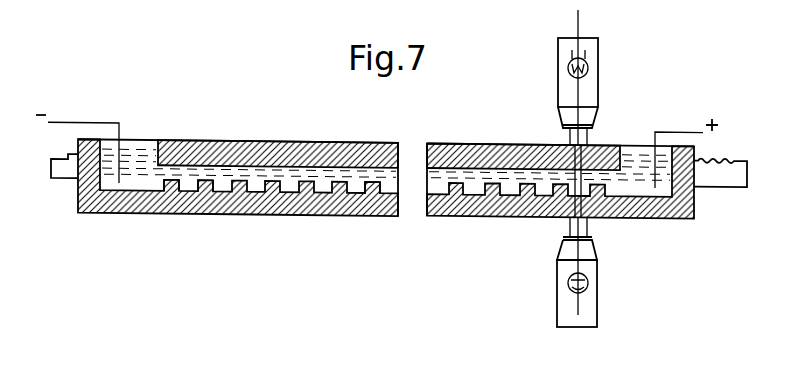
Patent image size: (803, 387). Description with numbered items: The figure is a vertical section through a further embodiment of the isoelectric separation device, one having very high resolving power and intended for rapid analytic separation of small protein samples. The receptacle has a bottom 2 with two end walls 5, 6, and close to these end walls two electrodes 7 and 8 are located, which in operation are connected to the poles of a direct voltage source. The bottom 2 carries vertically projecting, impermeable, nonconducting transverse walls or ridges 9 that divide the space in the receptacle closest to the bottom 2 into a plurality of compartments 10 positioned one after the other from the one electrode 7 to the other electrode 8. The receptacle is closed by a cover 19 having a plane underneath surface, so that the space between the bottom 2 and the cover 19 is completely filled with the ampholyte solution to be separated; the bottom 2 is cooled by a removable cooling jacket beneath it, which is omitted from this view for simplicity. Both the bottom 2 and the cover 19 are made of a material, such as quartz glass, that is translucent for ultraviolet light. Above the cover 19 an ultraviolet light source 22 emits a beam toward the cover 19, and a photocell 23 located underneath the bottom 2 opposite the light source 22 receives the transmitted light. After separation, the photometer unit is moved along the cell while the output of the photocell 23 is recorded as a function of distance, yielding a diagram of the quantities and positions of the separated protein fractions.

The bottom 2 is at (242, 198).
The end wall 5 is at (78, 186).
The end wall 6 is at (694, 192).
The electrode 7 is at (121, 145).
The electrode 8 is at (653, 150).
The transverse wall 9 is at (297, 197).
The compartment 10 is at (220, 197).
The cover 19 is at (262, 145).
The ultraviolet light source 22 is at (592, 80).
The photocell 23 is at (590, 303).